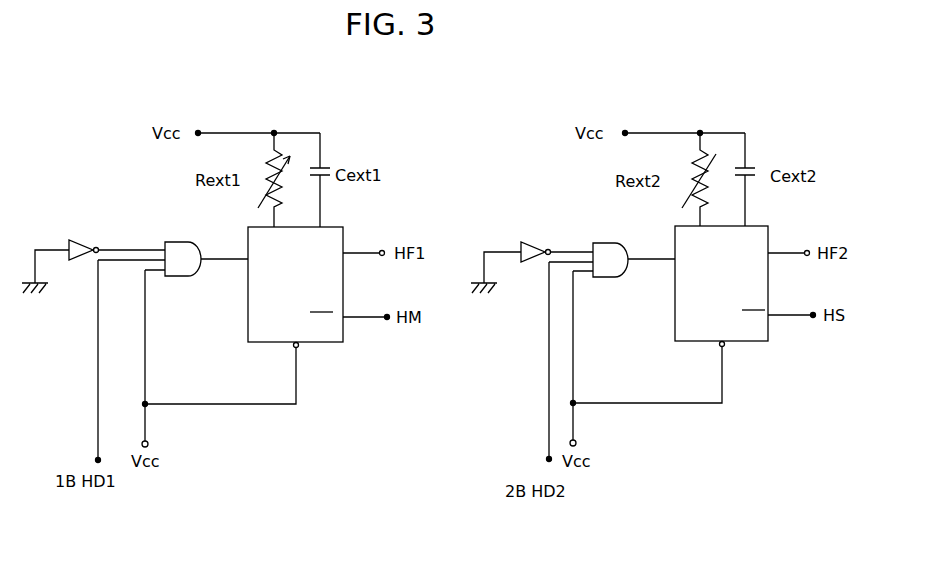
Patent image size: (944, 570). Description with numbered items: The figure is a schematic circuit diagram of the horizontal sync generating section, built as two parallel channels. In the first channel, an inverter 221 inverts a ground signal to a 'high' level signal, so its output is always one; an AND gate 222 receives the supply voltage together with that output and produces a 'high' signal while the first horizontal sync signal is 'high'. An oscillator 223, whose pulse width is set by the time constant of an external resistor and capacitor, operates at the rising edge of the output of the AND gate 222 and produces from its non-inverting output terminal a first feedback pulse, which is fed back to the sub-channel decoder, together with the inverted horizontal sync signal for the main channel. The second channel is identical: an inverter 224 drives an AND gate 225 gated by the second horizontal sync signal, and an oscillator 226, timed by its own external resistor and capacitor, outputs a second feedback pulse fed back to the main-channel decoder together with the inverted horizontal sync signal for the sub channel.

The inverter 221 is at (76, 240).
The AND gate 222 is at (178, 277).
The oscillator 223 is at (343, 237).
The inverter 224 is at (527, 241).
The AND gate 225 is at (612, 278).
The oscillator 226 is at (762, 237).